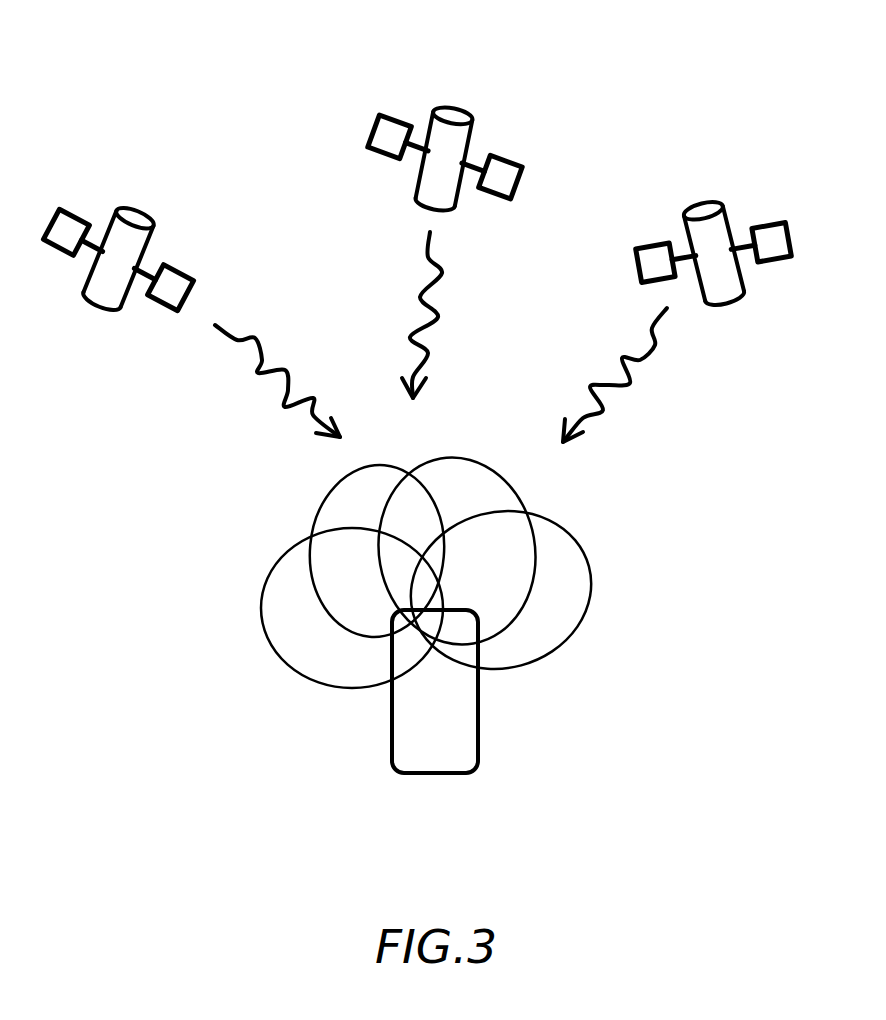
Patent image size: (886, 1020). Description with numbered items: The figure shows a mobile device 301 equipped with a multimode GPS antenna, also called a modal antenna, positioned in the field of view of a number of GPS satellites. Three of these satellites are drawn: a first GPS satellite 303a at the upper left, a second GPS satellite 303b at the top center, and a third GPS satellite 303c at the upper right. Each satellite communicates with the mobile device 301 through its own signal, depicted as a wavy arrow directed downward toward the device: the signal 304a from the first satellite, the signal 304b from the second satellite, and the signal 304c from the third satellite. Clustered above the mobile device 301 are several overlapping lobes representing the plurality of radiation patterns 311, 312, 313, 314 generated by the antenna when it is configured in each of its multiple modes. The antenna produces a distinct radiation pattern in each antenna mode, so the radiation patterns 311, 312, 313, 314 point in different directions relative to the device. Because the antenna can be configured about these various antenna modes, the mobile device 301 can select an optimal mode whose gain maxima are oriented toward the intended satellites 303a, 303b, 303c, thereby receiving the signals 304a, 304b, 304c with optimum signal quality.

The mobile device 301 is at (437, 778).
The GPS satellite 303a is at (135, 217).
The GPS satellite 303b is at (455, 108).
The GPS satellite 303c is at (700, 204).
The signal 304a is at (285, 405).
The signal 304b is at (412, 335).
The signal 304c is at (630, 385).
The radiation pattern 311 is at (292, 667).
The radiation pattern 312 is at (318, 498).
The radiation pattern 313 is at (476, 458).
The radiation pattern 314 is at (597, 590).